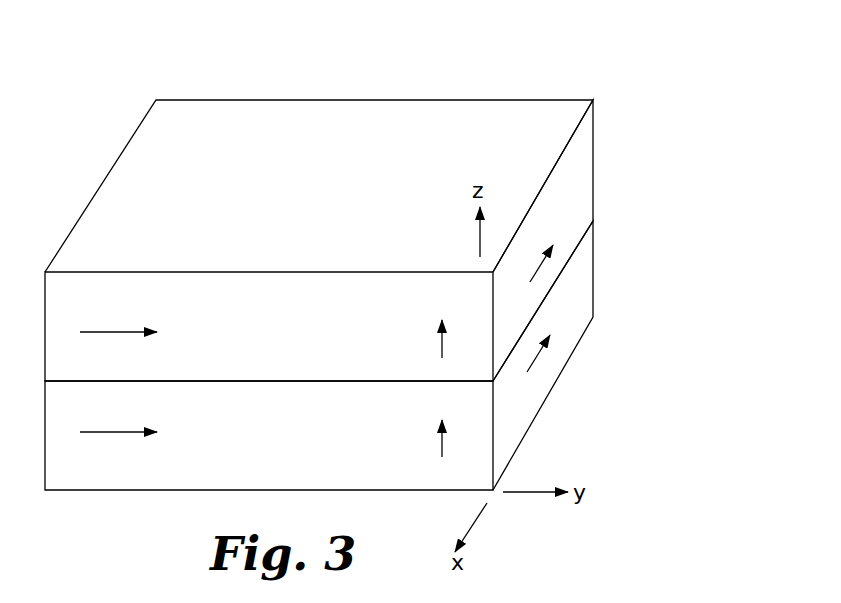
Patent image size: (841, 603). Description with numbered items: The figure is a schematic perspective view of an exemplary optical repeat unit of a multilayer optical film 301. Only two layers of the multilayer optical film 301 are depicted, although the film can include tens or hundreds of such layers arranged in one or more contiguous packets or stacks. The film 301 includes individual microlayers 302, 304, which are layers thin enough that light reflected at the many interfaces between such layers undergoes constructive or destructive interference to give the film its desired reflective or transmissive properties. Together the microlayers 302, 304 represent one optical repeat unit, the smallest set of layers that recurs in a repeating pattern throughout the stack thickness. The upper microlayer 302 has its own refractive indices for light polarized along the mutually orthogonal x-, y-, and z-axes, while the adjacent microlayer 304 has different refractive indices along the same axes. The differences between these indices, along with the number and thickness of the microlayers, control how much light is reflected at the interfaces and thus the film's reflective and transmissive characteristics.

The multilayer optical film 301 is at (391, 269).
The microlayer 302 is at (593, 168).
The microlayer 304 is at (593, 267).